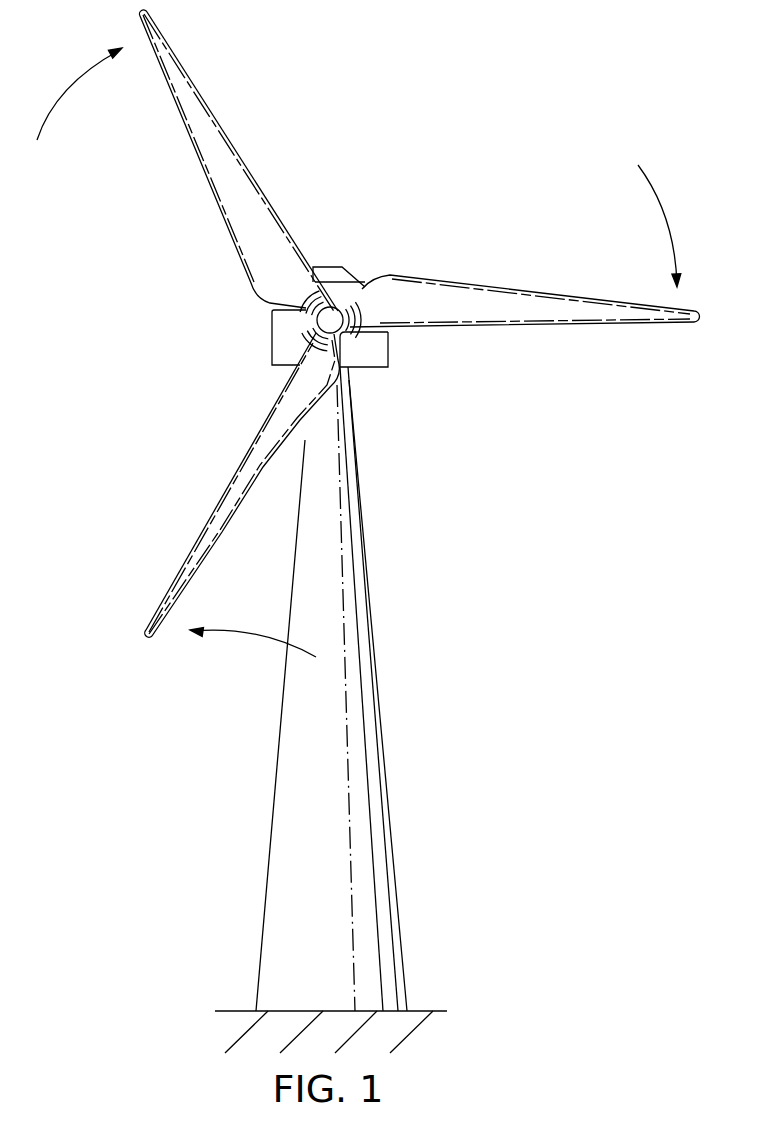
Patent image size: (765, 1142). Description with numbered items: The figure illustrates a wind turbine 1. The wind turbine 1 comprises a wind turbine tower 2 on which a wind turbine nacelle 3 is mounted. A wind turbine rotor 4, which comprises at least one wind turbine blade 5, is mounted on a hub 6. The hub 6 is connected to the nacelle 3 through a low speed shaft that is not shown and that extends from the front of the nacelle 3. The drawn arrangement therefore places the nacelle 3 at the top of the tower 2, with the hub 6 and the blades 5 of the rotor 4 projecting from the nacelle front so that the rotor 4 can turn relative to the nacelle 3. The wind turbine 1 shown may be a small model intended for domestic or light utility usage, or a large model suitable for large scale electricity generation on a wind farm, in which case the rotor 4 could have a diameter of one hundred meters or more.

The wind turbine 1 is at (533, 845).
The wind turbine tower 2 is at (383, 730).
The wind turbine nacelle 3 is at (382, 348).
The wind turbine rotor 4 is at (486, 136).
The wind turbine blade 5 is at (512, 298).
The hub 6 is at (330, 316).